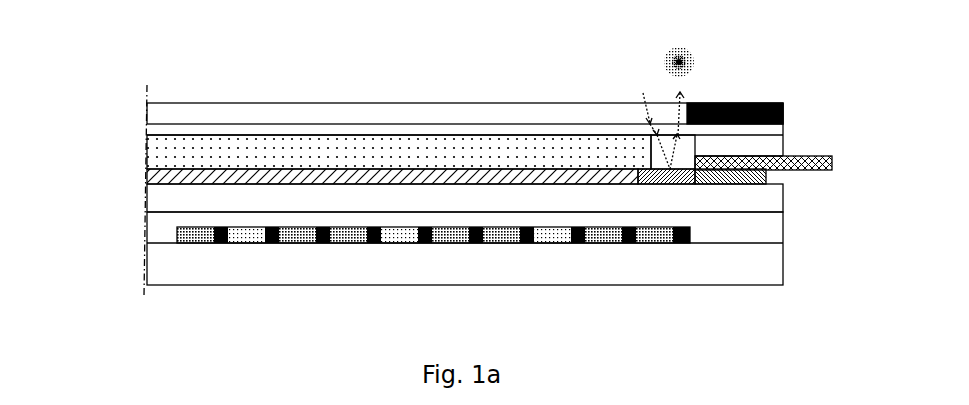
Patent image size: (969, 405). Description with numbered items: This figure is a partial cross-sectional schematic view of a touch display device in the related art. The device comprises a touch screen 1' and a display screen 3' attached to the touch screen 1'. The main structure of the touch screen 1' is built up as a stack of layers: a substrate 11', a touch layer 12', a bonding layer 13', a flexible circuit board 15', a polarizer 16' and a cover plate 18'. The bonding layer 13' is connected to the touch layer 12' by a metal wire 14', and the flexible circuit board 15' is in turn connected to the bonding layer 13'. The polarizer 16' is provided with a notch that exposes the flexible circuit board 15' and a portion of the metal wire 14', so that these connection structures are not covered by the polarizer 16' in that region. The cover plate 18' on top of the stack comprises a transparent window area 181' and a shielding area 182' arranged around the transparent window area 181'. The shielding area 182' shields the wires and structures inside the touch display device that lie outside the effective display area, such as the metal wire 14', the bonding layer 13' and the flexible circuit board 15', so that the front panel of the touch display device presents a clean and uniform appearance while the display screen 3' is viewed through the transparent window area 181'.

The touch screen 1' is at (523, 158).
The display screen 3' is at (487, 248).
The substrate 11' is at (416, 201).
The touch layer 12' is at (344, 174).
The bonding layer 13' is at (730, 251).
The metal wire 14' is at (637, 123).
The flexible circuit board 15' is at (768, 111).
The polarizer 16' is at (399, 102).
The cover plate 18' is at (482, 62).
The transparent window area 181' is at (465, 65).
The shielding area 182' is at (752, 62).